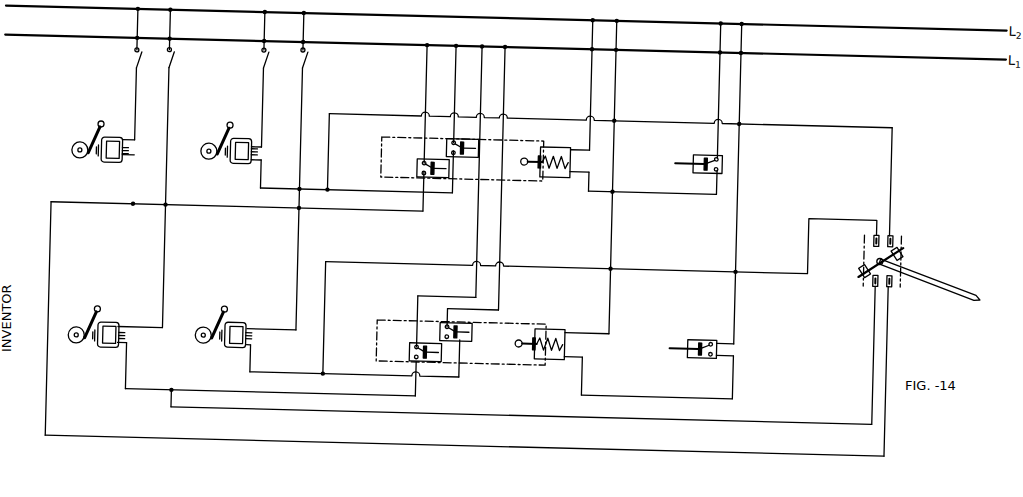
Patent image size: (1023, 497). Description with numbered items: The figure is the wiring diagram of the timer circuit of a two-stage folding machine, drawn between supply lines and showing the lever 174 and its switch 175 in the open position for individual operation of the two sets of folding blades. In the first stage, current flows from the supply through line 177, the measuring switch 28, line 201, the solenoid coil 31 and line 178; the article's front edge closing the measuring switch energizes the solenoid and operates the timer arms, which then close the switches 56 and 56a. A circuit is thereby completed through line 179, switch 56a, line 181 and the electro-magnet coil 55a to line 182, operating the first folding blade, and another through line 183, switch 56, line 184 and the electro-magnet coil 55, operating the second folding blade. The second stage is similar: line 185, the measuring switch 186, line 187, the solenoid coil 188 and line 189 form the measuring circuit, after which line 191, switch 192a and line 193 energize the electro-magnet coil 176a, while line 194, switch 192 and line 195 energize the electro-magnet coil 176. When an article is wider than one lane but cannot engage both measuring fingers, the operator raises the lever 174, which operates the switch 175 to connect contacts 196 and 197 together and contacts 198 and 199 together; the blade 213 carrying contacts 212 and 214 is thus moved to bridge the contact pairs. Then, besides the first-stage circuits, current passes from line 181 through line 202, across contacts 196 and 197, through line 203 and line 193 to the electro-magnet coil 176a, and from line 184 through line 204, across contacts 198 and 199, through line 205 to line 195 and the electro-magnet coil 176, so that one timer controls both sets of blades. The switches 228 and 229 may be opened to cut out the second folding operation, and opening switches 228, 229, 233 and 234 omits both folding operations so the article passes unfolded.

The switch 228 is at (130, 70).
The switch 229 is at (166, 72).
The switch 233 is at (258, 66).
The switch 234 is at (300, 67).
The electro-magnet coil 176 is at (110, 161).
The electro-magnet coil 176a is at (241, 161).
The electro-magnet coil 55 is at (116, 332).
The electro-magnet coil 55a is at (242, 329).
The line 194 is at (419, 90).
The line 191 is at (451, 81).
The line 189 is at (586, 87).
The line 185 is at (714, 92).
The line 177 is at (737, 172).
The line 178 is at (612, 233).
The line 203 is at (819, 117).
The switch 175 is at (889, 218).
The switch 192 is at (419, 162).
The switch 192a is at (468, 146).
The solenoid coil 188 is at (568, 163).
The measuring switch 186 is at (699, 163).
The line 187 is at (671, 189).
The line 193 is at (360, 179).
The line 195 is at (351, 213).
The line 182 is at (296, 247).
The line 183 is at (476, 236).
The line 179 is at (502, 224).
The line 202 is at (677, 265).
The line 181 is at (297, 360).
The line 184 is at (208, 382).
The line 204 is at (492, 414).
The line 205 is at (504, 447).
The line 201 is at (676, 376).
The switch 56 is at (414, 355).
The switch 56a is at (468, 341).
The solenoid coil 31 is at (567, 343).
The measuring switch 28 is at (702, 335).
The electrical contact 197 is at (872, 231).
The electrical contact 196 is at (891, 224).
The electrical contact 199 is at (873, 279).
The electrical contact 198 is at (893, 277).
The switch blade 213 is at (858, 268).
The contact 214 is at (861, 258).
The contact 212 is at (905, 243).
The lever 174 is at (969, 287).